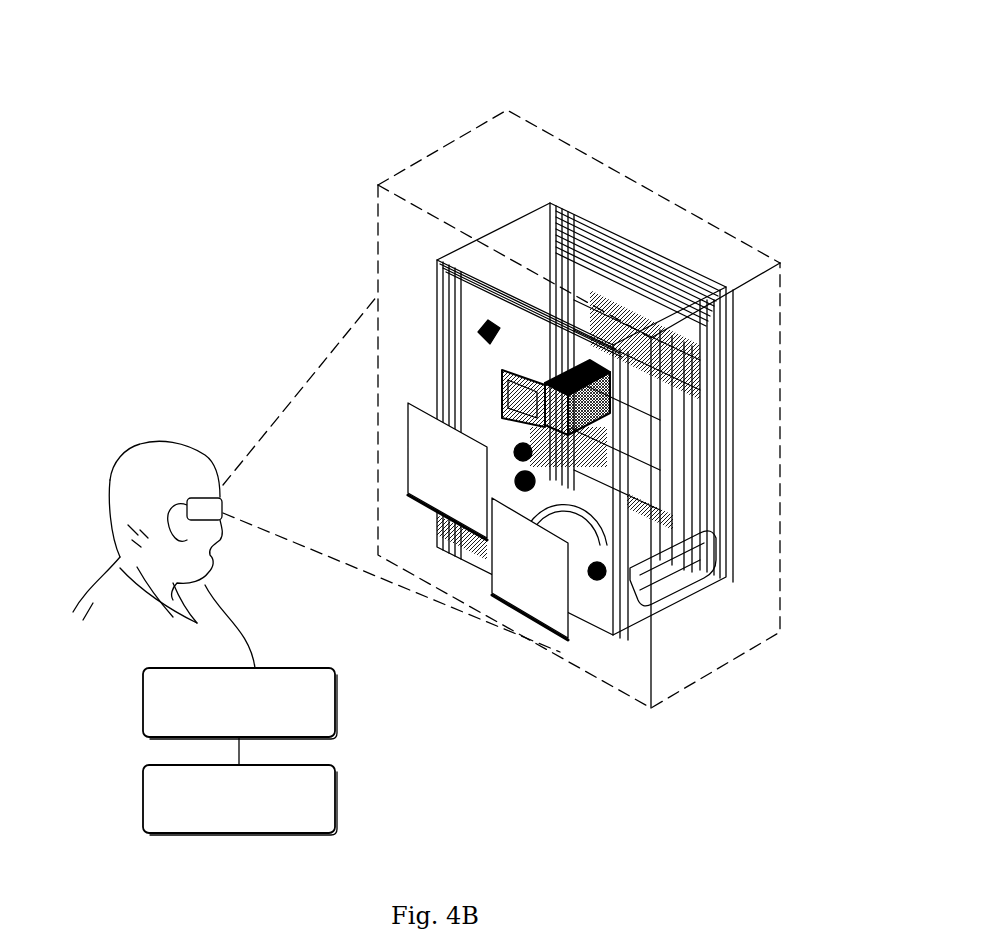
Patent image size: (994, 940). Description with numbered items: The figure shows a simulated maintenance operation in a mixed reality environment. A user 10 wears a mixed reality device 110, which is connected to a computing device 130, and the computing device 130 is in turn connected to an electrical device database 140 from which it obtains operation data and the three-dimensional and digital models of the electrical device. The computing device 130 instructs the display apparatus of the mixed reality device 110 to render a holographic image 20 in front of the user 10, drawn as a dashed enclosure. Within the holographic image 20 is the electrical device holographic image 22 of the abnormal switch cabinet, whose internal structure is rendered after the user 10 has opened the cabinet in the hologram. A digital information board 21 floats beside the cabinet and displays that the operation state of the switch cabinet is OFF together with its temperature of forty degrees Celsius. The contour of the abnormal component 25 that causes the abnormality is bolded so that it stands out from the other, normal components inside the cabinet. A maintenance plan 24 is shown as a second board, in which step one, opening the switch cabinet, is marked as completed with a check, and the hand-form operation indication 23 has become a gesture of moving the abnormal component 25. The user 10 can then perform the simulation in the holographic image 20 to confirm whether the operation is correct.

The user 10 is at (150, 420).
The mixed reality device 110 is at (187, 498).
The computing device 130 is at (320, 667).
The electrical device database 140 is at (320, 763).
The holographic image 20 is at (410, 107).
The digital information board 21 is at (433, 407).
The electrical device holographic image 22 is at (672, 263).
The hand-form operation indication 23 is at (633, 580).
The maintenance plan 24 is at (547, 637).
The abnormal component 25 is at (627, 380).